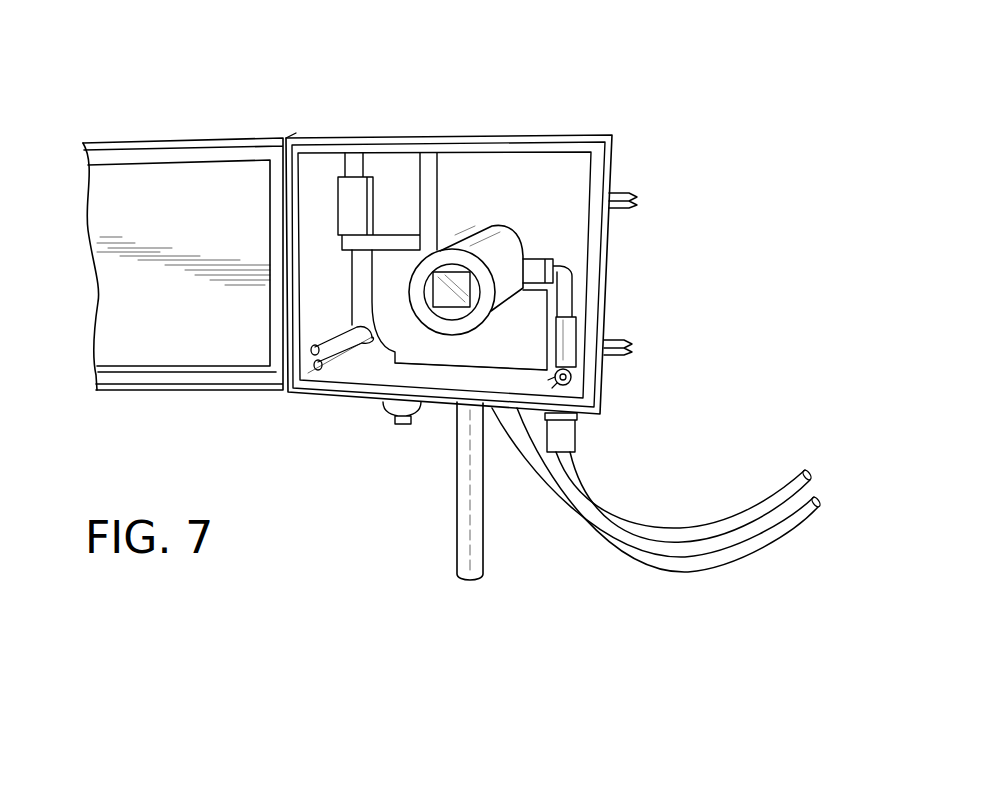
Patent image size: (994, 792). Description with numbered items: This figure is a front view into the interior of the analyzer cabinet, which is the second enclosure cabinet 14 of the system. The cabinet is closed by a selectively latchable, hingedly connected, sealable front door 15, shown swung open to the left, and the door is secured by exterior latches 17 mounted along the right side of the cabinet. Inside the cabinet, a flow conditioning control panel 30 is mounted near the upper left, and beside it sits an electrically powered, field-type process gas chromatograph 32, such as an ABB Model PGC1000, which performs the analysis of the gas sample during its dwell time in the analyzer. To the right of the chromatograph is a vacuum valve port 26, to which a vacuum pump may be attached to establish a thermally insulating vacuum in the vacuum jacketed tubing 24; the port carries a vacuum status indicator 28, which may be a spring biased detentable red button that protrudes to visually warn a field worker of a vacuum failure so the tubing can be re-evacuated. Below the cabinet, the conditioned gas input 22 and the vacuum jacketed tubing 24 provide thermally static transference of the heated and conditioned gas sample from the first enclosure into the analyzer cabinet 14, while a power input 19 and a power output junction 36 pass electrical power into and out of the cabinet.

The second enclosure cabinet 14 is at (562, 136).
The front door 15 is at (182, 287).
The exterior latches 17 is at (635, 202).
The power input 19 is at (450, 523).
The conditioned gas input 22 is at (743, 542).
The vacuum jacketed tubing 24 is at (662, 533).
The vacuum valve port 26 is at (566, 347).
The vacuum status indicator 28 is at (548, 380).
The flow conditioning control panel 30 is at (361, 188).
The process gas chromatograph 32 is at (460, 257).
The power output junction 36 is at (392, 408).